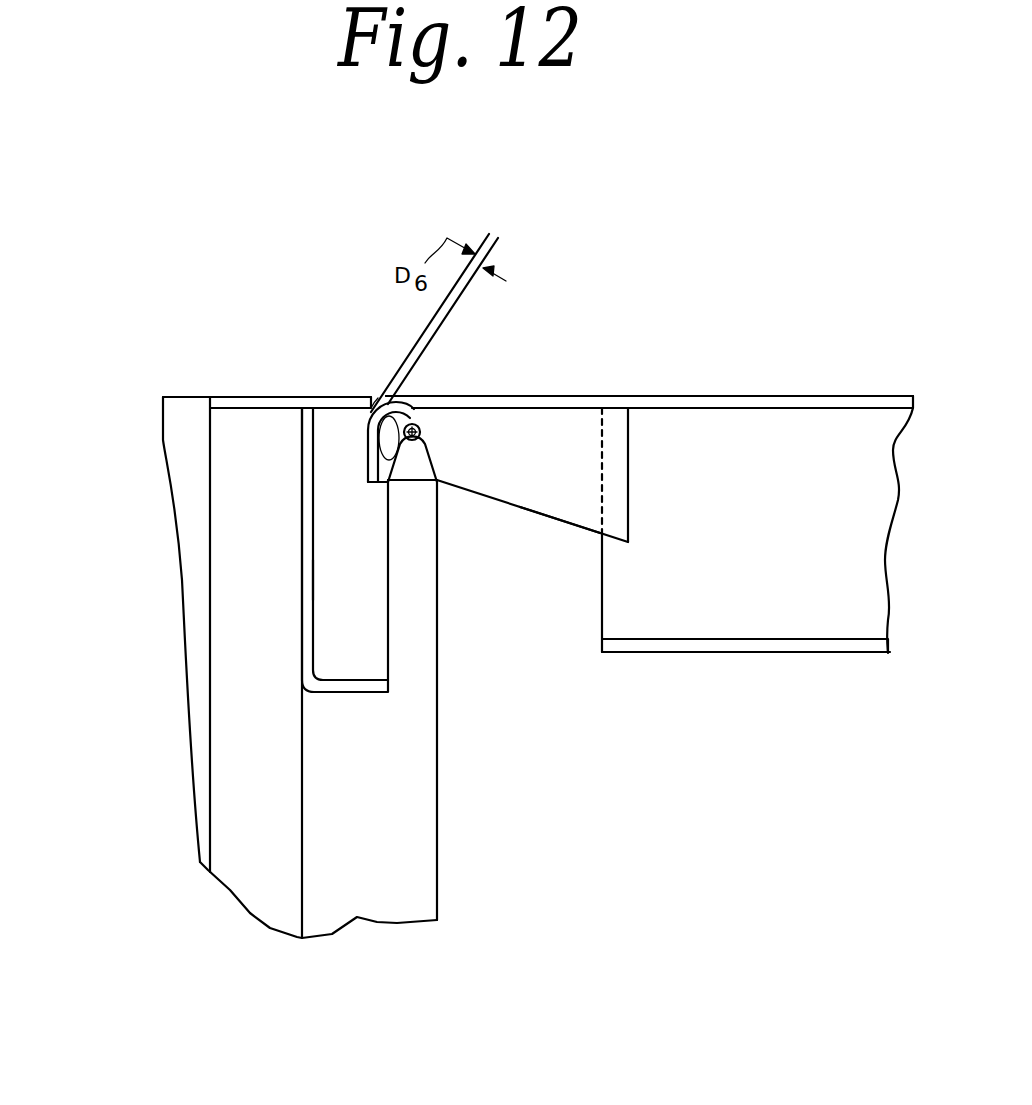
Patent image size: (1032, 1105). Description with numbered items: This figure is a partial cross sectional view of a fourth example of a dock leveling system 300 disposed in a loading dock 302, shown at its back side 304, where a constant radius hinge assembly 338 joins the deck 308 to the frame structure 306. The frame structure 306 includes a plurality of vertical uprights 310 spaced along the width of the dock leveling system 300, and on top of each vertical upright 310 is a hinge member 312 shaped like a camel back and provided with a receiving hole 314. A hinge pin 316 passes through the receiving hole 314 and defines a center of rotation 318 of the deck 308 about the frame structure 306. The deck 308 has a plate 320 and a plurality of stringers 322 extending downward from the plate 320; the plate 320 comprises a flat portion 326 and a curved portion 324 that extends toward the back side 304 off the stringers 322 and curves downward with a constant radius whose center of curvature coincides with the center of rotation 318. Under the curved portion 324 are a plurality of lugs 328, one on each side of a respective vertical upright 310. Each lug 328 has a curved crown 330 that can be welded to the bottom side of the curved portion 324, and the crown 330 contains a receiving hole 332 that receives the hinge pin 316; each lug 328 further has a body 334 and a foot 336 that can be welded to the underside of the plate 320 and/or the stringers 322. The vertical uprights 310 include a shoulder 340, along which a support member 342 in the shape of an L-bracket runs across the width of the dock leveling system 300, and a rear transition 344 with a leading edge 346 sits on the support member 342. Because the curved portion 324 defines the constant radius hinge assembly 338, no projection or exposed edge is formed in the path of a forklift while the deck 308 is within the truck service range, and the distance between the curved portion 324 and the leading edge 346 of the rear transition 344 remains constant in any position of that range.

The dock leveling system 300 is at (643, 215).
The loading dock 302 is at (187, 397).
The back side 304 is at (242, 288).
The frame structure 306 is at (437, 867).
The deck 308 is at (782, 396).
The vertical upright 310 is at (437, 773).
The hinge member 312 is at (387, 480).
The receiving hole 314 is at (376, 462).
The hinge pin 316 is at (382, 452).
The center of rotation 318 is at (302, 592).
The plate 320 is at (667, 396).
The stringer 322 is at (783, 653).
The curved portion 324 is at (421, 396).
The flat portion 326 is at (502, 397).
The lug 328 is at (498, 500).
The crown 330 is at (392, 444).
The receiving hole 332 is at (400, 436).
The body 334 is at (543, 516).
The foot 336 is at (628, 508).
The constant radius hinge assembly 338 is at (368, 430).
The shoulder 340 is at (343, 693).
The support member 342 is at (400, 445).
The rear transition 344 is at (232, 397).
The leading edge 346 is at (378, 396).